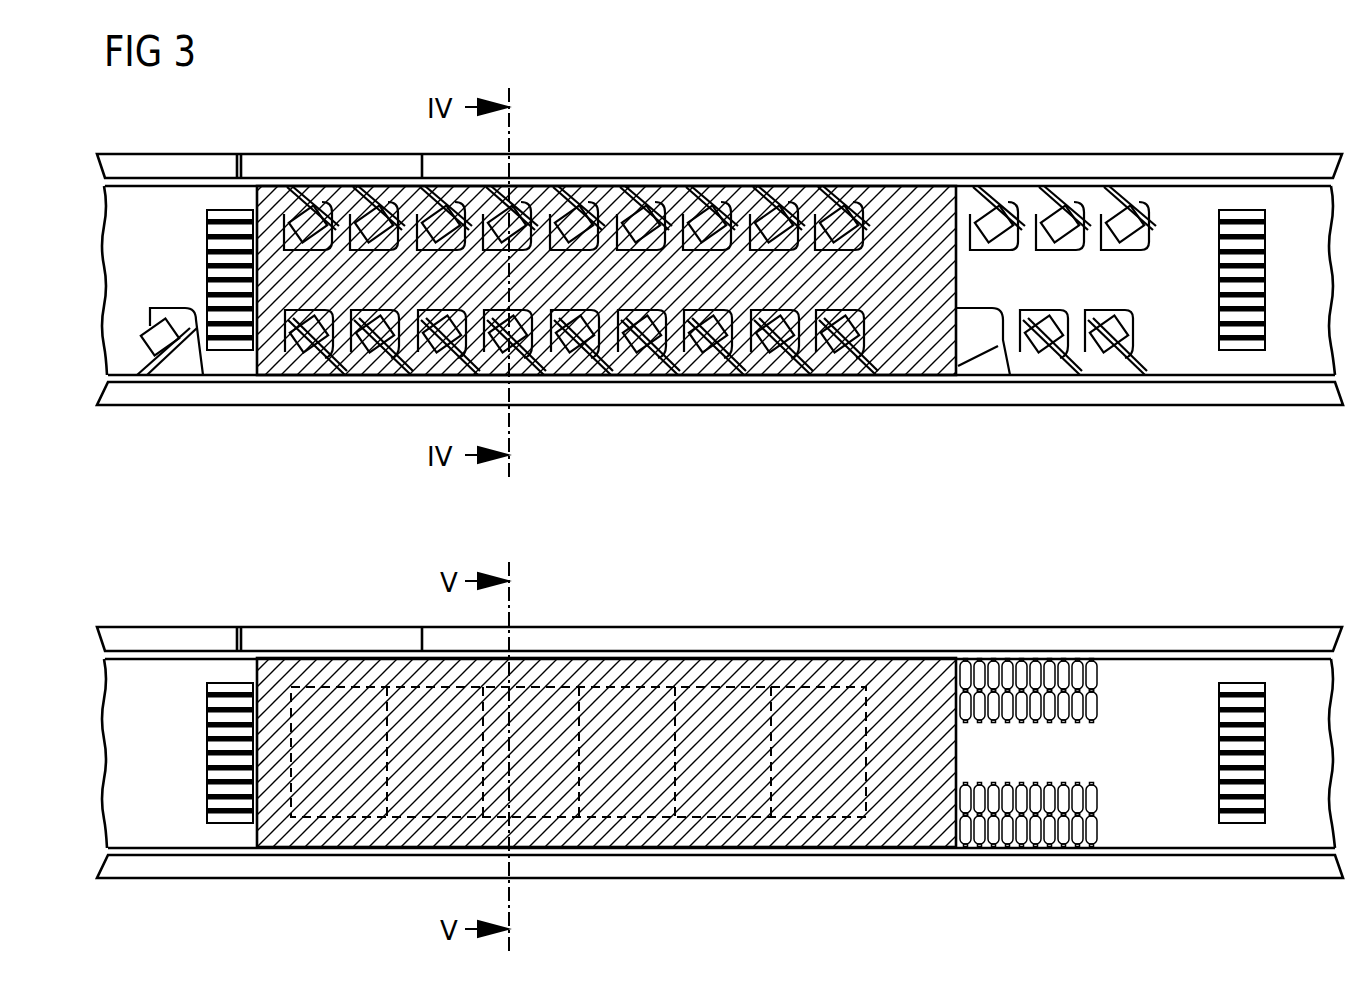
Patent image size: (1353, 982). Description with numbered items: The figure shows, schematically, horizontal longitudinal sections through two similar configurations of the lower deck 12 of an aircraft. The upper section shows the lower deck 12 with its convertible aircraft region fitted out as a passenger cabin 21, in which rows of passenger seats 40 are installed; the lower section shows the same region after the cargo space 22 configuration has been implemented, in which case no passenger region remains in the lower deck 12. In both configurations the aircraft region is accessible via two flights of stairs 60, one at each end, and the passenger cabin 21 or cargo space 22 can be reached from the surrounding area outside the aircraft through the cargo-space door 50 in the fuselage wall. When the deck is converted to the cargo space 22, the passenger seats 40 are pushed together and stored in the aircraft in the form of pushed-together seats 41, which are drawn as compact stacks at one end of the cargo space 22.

The lower deck 12 is at (1058, 142).
The passenger cabin 21 is at (613, 280).
The cargo space 22 is at (613, 745).
The passenger seats 40 is at (834, 338).
The pushed-together seats 41 is at (990, 665).
The cargo-space door 50 is at (330, 168).
The flight of stairs 60 is at (232, 228).